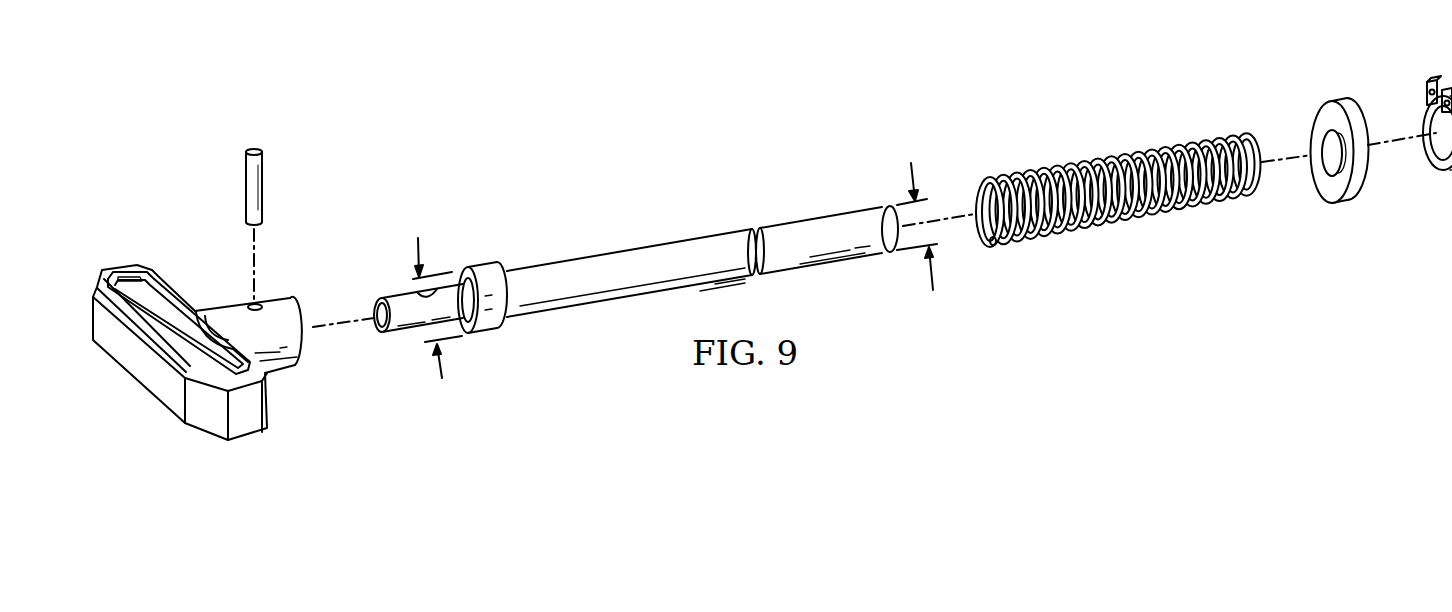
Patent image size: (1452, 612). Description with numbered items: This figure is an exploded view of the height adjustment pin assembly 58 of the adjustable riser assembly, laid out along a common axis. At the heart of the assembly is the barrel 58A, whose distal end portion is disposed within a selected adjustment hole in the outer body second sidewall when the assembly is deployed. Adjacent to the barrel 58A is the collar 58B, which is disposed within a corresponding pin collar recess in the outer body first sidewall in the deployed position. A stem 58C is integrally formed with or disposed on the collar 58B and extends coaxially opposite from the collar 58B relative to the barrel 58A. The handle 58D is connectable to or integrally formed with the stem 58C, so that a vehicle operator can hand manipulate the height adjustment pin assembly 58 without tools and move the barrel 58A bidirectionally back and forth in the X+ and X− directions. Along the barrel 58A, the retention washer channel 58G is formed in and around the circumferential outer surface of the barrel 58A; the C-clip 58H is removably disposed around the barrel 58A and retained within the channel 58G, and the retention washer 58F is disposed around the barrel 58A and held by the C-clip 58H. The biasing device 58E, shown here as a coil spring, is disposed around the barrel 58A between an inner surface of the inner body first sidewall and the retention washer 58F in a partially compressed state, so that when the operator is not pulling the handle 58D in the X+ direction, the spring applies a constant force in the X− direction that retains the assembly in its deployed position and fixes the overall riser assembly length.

The height adjustment pin assembly 58 is at (647, 128).
The barrel 58A is at (610, 252).
The collar 58B is at (477, 268).
The stem 58C is at (393, 293).
The handle 58D is at (182, 312).
The biasing device 58E is at (1075, 163).
The retention washer 58F is at (1333, 100).
The retention washer channel 58G is at (748, 232).
The C-clip 58H is at (1430, 76).